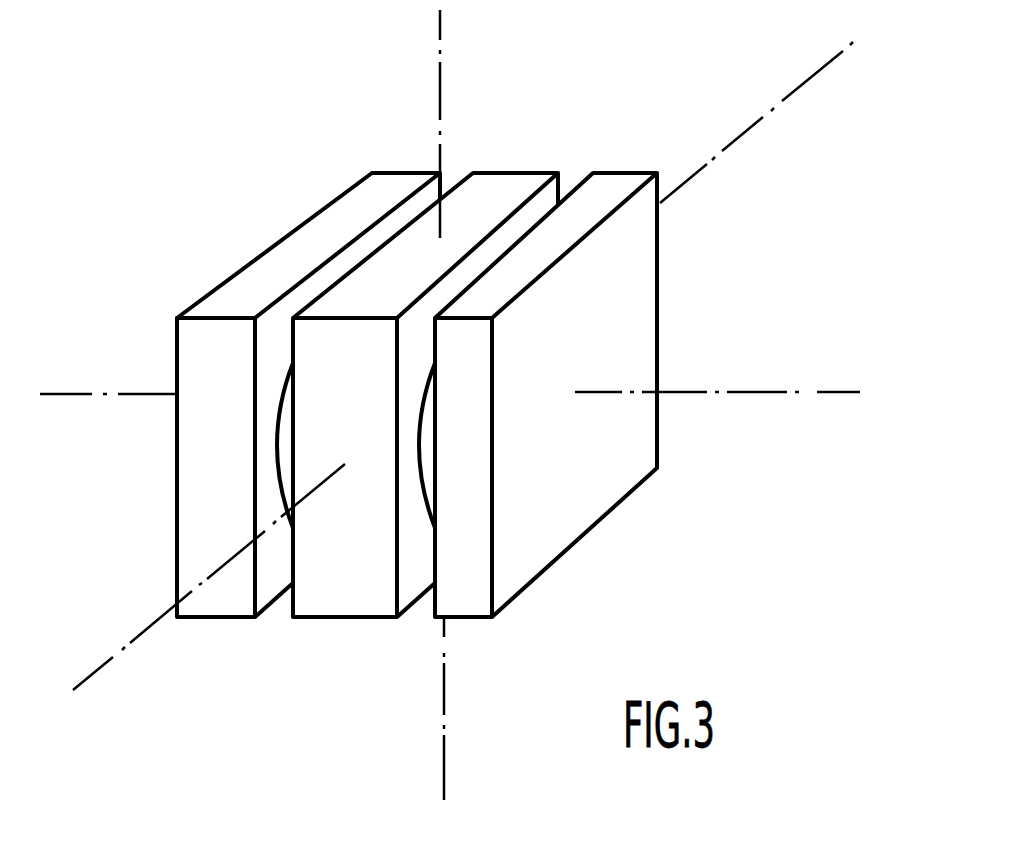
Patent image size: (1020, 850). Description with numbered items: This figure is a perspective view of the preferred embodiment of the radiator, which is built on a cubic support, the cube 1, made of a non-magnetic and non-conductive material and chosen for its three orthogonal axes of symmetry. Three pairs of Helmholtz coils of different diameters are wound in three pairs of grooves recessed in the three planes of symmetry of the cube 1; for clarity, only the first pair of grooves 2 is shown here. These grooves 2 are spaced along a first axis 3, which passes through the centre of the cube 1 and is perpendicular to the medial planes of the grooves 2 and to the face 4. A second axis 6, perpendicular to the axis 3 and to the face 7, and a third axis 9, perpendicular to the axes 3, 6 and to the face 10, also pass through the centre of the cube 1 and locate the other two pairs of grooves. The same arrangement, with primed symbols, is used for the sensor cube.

The cube 1 is at (290, 214).
The first pair of grooves 2 is at (287, 602).
The first axis 3 is at (755, 392).
The face 4 is at (567, 498).
The second axis 6 is at (443, 82).
The face 7 is at (602, 195).
The third axis 9 is at (807, 80).
The face 10 is at (202, 538).